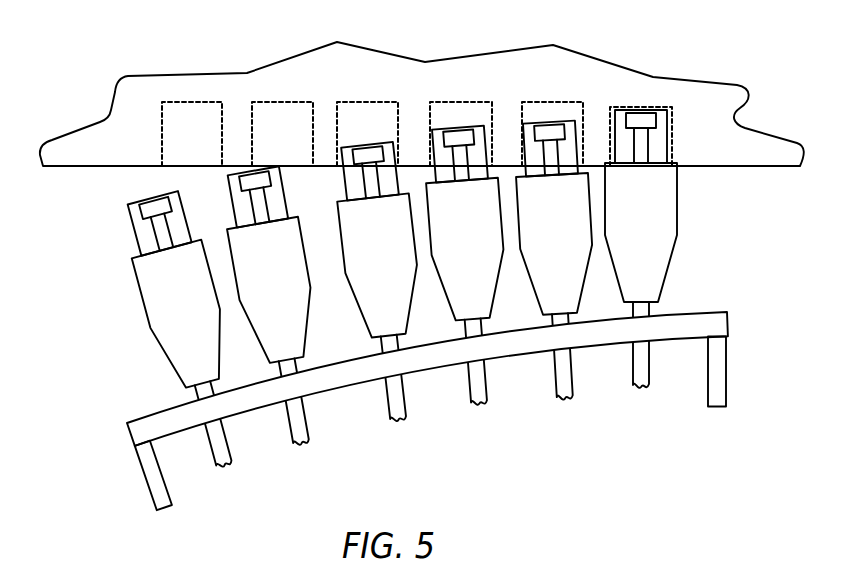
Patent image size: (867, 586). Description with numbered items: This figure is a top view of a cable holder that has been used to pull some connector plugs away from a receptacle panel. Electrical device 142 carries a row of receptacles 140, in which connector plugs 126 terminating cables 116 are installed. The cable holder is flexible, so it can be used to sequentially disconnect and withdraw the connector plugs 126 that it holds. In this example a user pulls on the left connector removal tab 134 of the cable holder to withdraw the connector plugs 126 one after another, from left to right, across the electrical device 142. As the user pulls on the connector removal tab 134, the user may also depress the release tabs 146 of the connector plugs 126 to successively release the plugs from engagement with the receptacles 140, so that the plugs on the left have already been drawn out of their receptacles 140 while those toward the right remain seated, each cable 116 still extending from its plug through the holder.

The cable 116 is at (222, 458).
The connector plug 126 is at (156, 354).
The connector removal tab 134 is at (142, 483).
The receptacle 140 is at (307, 109).
The electrical device 142 is at (542, 83).
The release tab 146 is at (150, 212).